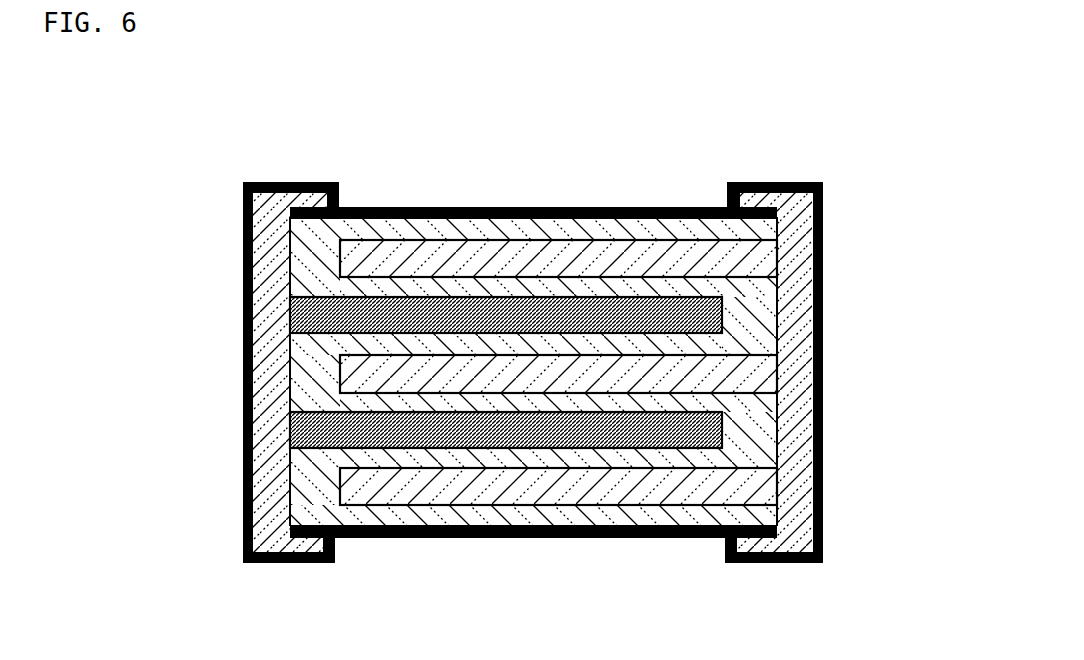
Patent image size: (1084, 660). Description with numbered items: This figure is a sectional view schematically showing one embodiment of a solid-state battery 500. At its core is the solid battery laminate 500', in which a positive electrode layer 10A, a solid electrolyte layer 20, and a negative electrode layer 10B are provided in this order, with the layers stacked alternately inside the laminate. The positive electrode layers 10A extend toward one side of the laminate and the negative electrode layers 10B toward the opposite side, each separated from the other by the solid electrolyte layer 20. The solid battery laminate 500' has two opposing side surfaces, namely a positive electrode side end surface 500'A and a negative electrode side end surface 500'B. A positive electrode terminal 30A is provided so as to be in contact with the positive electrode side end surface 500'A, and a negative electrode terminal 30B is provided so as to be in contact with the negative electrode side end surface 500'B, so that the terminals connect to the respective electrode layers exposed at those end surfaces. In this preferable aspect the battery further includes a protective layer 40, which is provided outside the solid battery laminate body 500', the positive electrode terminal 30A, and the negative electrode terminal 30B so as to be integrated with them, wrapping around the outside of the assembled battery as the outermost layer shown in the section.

The solid-state battery 500 is at (528, 326).
The solid battery laminate 500' is at (533, 344).
The positive electrode side end surface 500'A is at (210, 372).
The negative electrode side end surface 500'B is at (851, 372).
The positive electrode layer 10A is at (300, 314).
The negative electrode layer 10B is at (760, 371).
The solid electrolyte layer 20 is at (347, 343).
The positive electrode terminal 30A is at (228, 372).
The negative electrode terminal 30B is at (831, 372).
The protective layer 40 is at (818, 540).